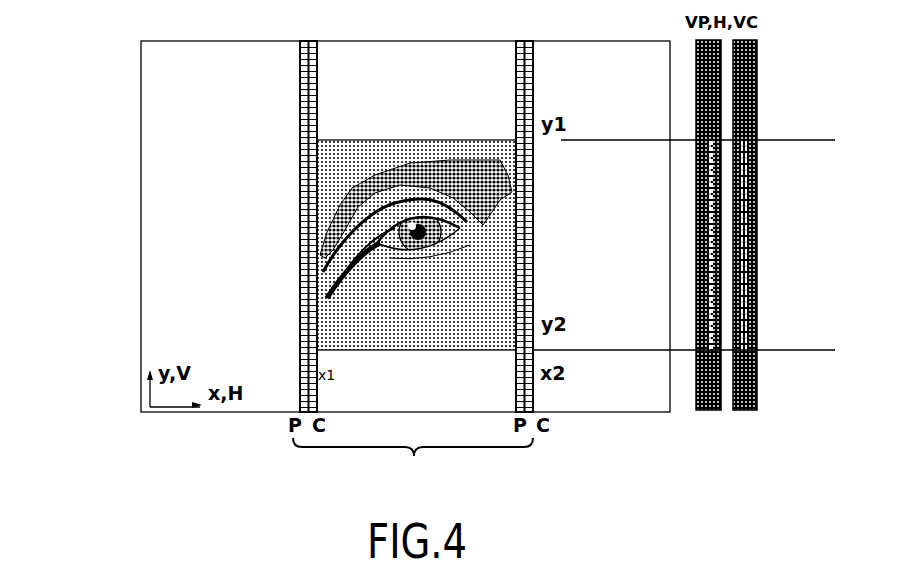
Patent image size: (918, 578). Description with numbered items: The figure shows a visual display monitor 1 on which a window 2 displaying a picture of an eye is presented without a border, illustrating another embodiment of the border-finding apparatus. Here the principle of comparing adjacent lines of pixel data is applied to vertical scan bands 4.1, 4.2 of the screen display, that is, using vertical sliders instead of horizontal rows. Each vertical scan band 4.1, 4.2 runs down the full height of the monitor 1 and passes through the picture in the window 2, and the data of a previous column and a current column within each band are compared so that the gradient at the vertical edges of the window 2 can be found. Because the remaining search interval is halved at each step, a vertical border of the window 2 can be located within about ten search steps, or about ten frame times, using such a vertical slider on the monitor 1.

The visual display monitor 1 is at (141, 74).
The window 2 is at (468, 139).
The vertical scan band 4.1 is at (509, 229).
The vertical scan band 4.2 is at (636, 229).